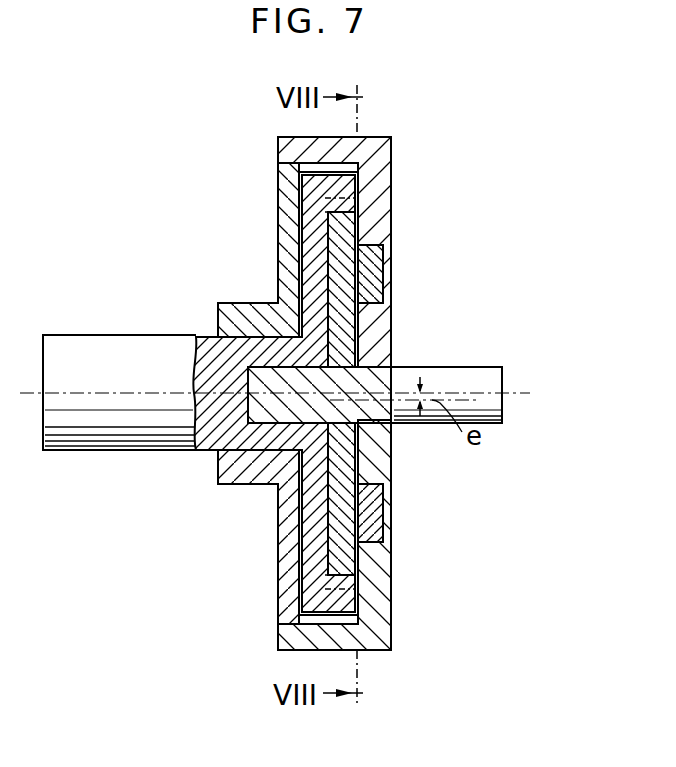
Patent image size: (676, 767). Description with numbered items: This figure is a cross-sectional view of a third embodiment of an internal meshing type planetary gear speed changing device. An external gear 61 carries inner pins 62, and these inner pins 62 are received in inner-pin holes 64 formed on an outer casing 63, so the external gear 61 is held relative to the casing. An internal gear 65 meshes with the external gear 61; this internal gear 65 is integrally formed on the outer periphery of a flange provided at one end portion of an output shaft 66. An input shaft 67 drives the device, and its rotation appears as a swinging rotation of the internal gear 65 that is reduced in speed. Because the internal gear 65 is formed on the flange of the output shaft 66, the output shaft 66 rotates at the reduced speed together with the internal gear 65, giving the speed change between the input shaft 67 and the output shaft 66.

The external gear 61 is at (343, 335).
The inner pins 62 is at (366, 275).
The outer casing 63 is at (380, 208).
The inner-pin holes 64 is at (372, 257).
The internal gear 65 is at (350, 183).
The output shaft 66 is at (83, 440).
The input shaft 67 is at (490, 407).